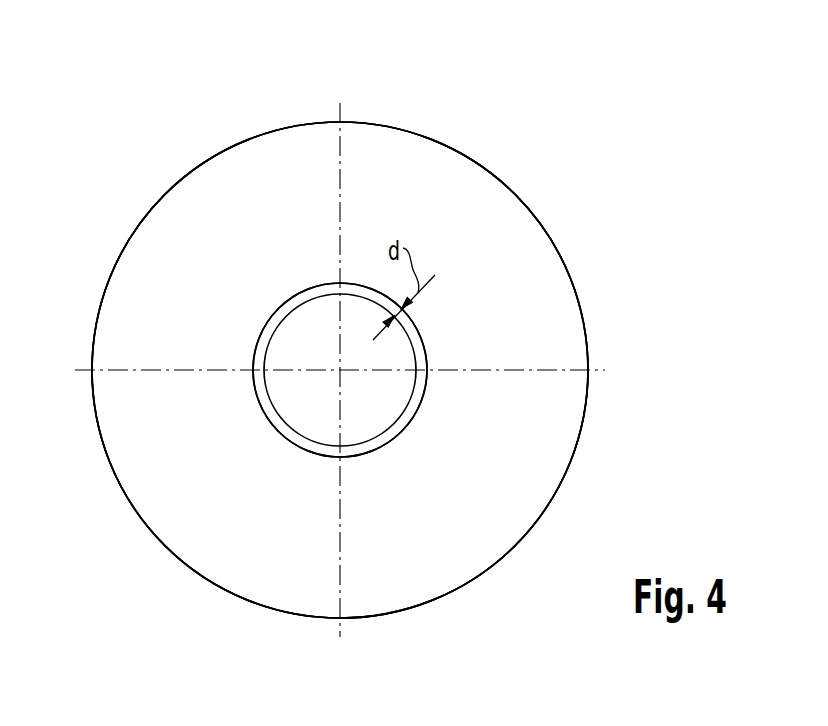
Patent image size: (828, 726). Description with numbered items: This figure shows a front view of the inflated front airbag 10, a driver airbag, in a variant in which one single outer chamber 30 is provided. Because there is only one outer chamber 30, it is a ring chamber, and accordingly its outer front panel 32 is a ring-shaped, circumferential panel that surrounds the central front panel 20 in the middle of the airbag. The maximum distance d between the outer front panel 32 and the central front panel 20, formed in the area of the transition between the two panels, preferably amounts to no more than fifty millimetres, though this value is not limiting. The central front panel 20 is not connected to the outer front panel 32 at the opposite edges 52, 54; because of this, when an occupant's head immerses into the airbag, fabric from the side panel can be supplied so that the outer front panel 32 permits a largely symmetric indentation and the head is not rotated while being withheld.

The front airbag 10 is at (610, 175).
The central front panel 20 is at (403, 348).
The outer chamber 30 is at (557, 470).
The outer front panel 32 is at (528, 515).
The opposite edge 52 is at (255, 390).
The opposite edge 54 is at (258, 345).